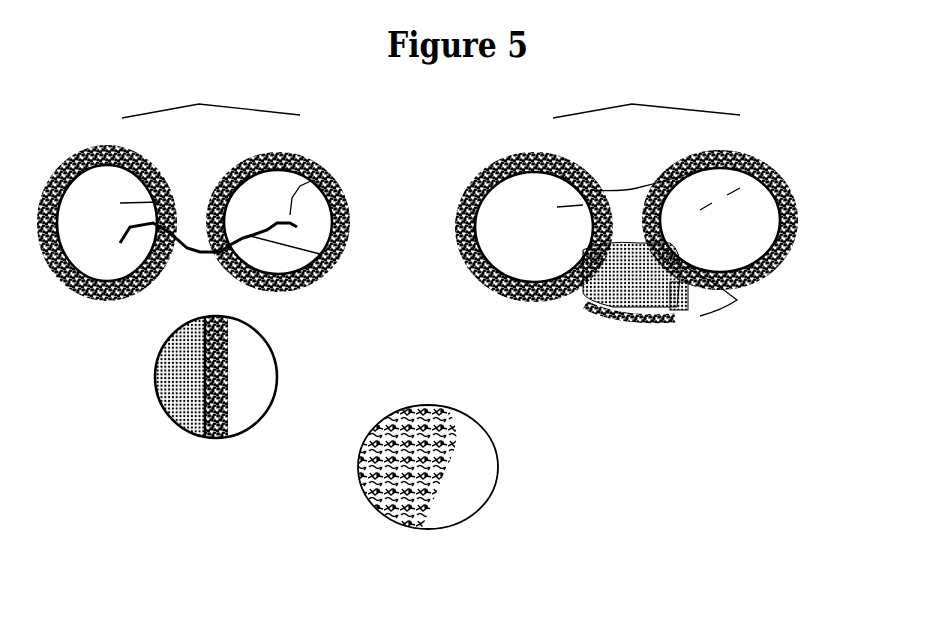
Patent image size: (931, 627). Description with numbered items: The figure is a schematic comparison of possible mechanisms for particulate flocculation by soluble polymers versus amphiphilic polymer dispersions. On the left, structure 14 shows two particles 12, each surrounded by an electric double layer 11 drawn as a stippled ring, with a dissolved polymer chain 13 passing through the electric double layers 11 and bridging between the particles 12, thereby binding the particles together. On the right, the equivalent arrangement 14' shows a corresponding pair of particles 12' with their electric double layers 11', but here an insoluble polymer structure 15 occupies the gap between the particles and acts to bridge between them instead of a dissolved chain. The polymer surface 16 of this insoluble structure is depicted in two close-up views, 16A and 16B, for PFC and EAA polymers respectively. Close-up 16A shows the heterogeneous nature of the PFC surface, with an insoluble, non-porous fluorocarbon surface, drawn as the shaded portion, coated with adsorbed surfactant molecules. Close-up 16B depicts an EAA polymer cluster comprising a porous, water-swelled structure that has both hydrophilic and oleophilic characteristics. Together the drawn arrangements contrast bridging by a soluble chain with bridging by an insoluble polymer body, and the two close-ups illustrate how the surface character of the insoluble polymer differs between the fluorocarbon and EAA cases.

The electric double layers 11 is at (243, 196).
The particles 12 is at (238, 219).
The dissolved polymer chain 13 is at (275, 238).
The structure 14 is at (211, 95).
The electric double layers 11' is at (670, 198).
The particles 12' is at (665, 222).
The equivalent arrangement 14' is at (646, 95).
The insoluble polymer structure 15 is at (770, 281).
The polymer surface 16 is at (720, 287).
The close-up of PFC polymer surface 16A is at (410, 369).
The close-up of EAA polymer cluster 16B is at (513, 418).